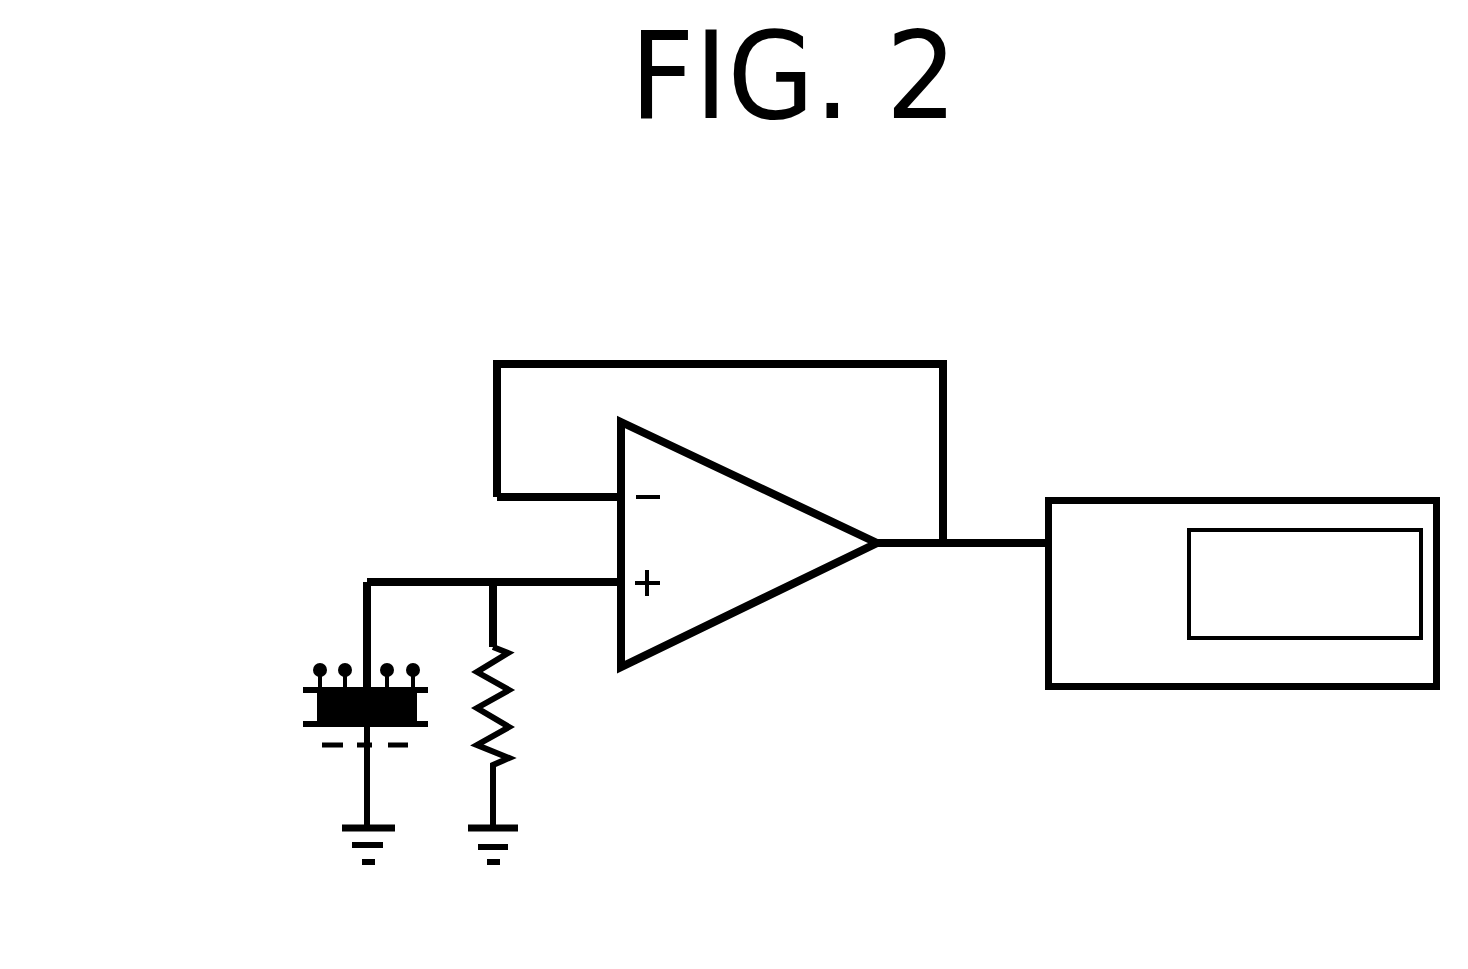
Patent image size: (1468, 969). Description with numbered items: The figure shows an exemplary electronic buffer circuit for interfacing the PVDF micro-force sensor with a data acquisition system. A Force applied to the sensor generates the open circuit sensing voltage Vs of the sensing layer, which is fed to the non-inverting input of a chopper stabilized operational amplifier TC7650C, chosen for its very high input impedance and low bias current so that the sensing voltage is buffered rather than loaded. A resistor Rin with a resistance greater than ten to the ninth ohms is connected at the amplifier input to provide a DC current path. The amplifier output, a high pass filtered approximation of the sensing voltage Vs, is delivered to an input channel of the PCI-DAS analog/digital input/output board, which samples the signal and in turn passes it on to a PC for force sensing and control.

The chopper stabilized operational amplifier TC7650C is at (771, 515).
The sensing voltage Vs is at (673, 587).
The force Force is at (272, 681).
The resistor Rin is at (535, 754).
The PCI-DAS4020/12 analog/digital input/output board PCI-DAS is at (1243, 594).